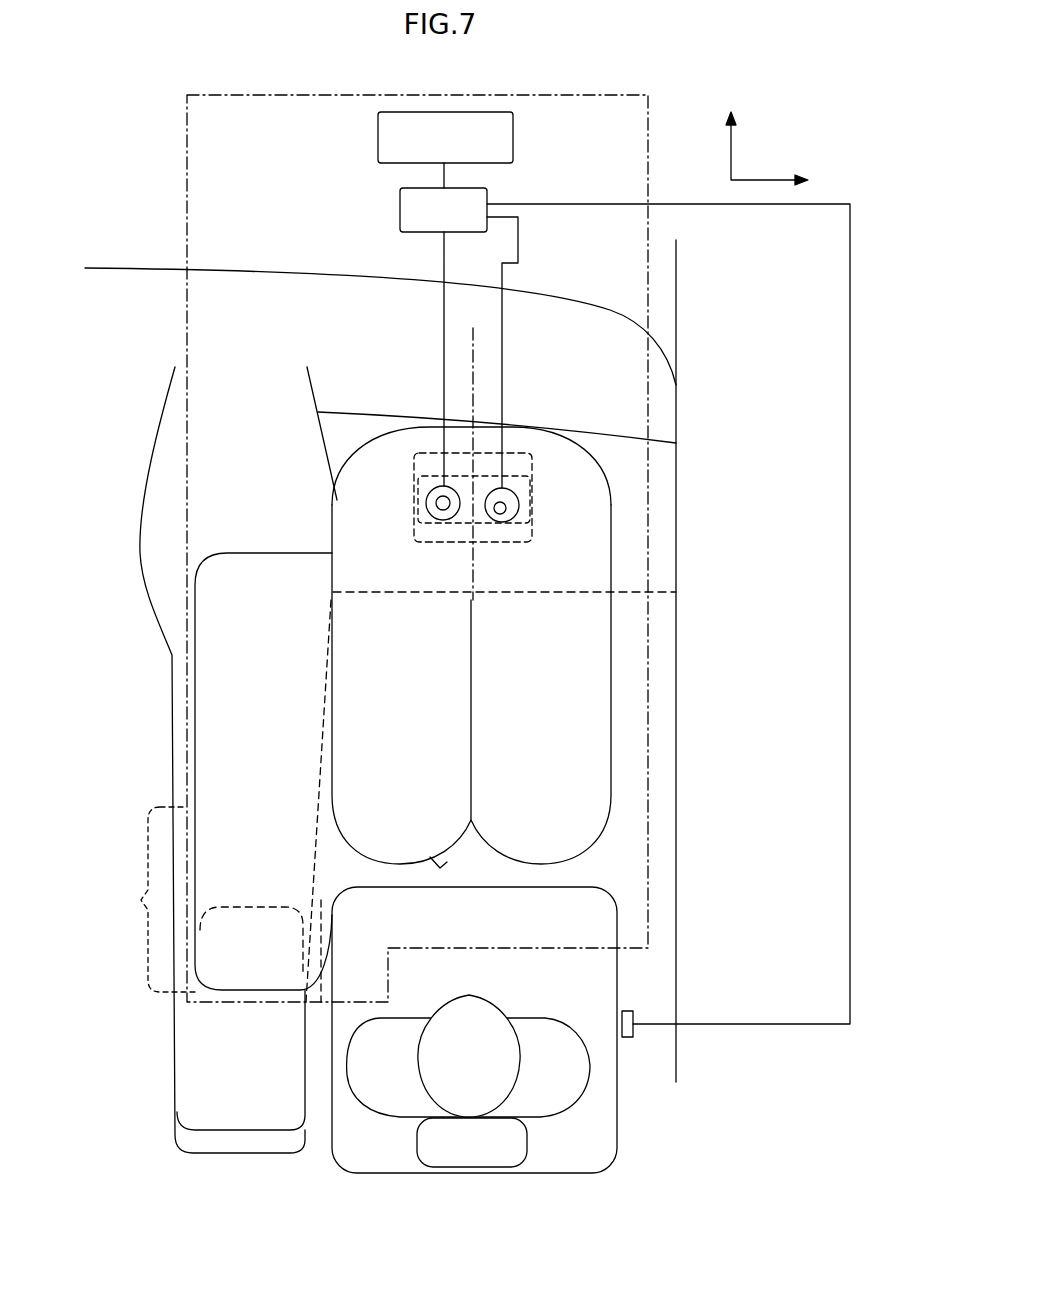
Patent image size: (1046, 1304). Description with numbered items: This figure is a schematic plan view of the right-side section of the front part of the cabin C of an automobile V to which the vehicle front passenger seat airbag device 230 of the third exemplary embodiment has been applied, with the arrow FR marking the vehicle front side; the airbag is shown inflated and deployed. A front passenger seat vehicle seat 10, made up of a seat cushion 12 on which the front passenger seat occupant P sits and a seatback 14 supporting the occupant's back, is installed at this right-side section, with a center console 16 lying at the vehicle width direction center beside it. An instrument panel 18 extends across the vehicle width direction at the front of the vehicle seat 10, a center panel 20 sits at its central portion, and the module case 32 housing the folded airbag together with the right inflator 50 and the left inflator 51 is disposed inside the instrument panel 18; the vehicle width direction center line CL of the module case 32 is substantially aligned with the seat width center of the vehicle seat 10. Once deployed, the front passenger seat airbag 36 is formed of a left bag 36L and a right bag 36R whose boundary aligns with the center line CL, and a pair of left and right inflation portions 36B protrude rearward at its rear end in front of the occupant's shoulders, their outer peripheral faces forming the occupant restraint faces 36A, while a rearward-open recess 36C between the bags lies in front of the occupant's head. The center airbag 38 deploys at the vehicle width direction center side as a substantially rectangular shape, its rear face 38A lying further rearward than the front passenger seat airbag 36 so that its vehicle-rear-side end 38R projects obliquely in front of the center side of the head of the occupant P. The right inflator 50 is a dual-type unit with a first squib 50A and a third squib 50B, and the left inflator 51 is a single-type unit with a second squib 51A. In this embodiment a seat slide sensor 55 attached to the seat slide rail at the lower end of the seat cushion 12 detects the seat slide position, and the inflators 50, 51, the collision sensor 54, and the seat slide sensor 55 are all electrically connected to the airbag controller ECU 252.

The vehicle seat 10 is at (320, 1150).
The seat cushion 12 is at (617, 990).
The seatback 14 is at (617, 1125).
The center console 16 is at (170, 690).
The instrument panel 18 is at (575, 327).
The center panel 20 is at (203, 403).
The module case 32 is at (485, 503).
The front passenger seat airbag 36 is at (588, 680).
The right bag 36R is at (577, 625).
The left bag 36L is at (447, 643).
The occupant restraint face 36A is at (443, 862).
The inflation portion 36B is at (583, 827).
The recess 36C is at (500, 842).
The center airbag 38 is at (193, 735).
The vehicle-rear-side end 38R is at (140, 899).
The rear face 38A is at (243, 993).
The right inflator 50 is at (513, 535).
The first squib 50A is at (488, 522).
The third squib 50B is at (517, 507).
The left inflator 51 is at (432, 533).
The second squib 51A is at (420, 500).
The collision sensor 54 is at (378, 132).
The seat slide sensor 55 is at (630, 1040).
The vehicle front passenger seat airbag device 230 is at (647, 428).
The airbag controller ECU 252 is at (400, 207).
The cabin C is at (653, 720).
The vehicle width direction center line CL is at (473, 370).
The front passenger seat occupant P is at (493, 1003).
The automobile V is at (764, 392).
The arrow FR is at (787, 141).